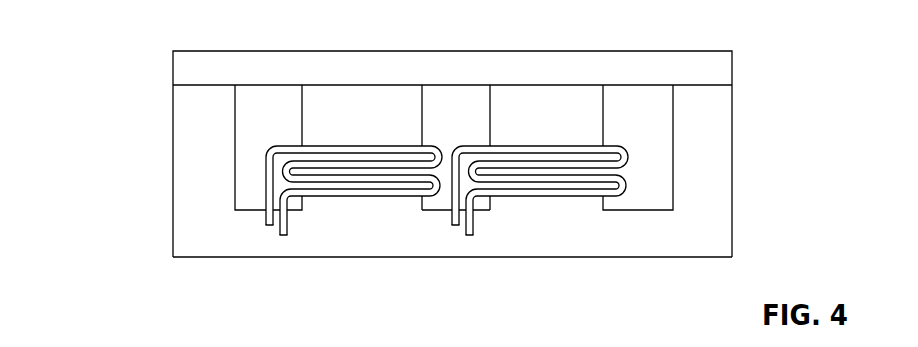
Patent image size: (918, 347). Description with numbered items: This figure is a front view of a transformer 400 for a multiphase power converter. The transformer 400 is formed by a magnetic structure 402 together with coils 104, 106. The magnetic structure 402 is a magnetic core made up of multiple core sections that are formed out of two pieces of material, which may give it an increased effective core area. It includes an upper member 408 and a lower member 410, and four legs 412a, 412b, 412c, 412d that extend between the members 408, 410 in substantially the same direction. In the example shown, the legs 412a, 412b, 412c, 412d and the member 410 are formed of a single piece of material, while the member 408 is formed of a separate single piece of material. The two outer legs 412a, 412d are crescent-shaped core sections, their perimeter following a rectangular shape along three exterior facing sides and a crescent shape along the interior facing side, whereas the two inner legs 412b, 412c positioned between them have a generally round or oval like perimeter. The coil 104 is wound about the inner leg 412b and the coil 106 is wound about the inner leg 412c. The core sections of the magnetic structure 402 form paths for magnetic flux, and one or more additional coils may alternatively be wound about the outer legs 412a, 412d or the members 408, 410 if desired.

The transformer 400 is at (118, 46).
The magnetic structure 402 is at (735, 113).
The member 408 is at (517, 63).
The member 410 is at (357, 238).
The outer leg 412a is at (186, 150).
The inner leg 412b is at (392, 129).
The inner leg 412c is at (576, 131).
The outer leg 412d is at (720, 172).
The coil 104 is at (390, 188).
The coil 106 is at (578, 188).